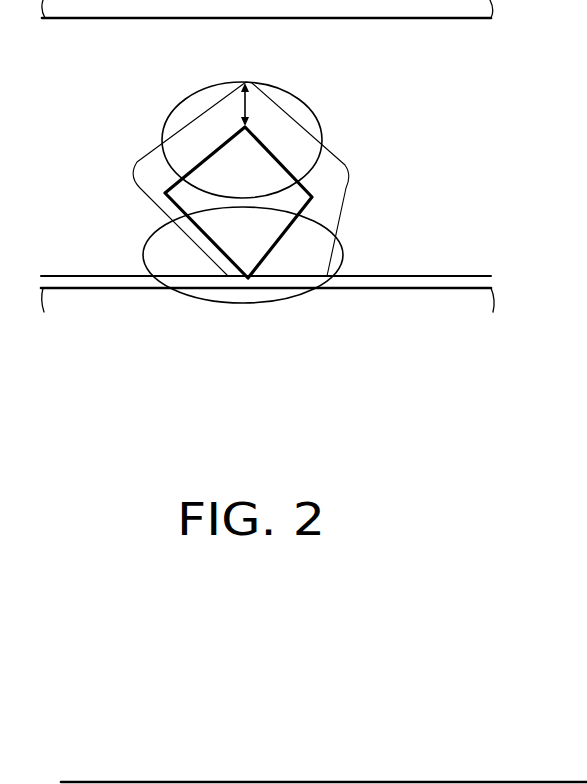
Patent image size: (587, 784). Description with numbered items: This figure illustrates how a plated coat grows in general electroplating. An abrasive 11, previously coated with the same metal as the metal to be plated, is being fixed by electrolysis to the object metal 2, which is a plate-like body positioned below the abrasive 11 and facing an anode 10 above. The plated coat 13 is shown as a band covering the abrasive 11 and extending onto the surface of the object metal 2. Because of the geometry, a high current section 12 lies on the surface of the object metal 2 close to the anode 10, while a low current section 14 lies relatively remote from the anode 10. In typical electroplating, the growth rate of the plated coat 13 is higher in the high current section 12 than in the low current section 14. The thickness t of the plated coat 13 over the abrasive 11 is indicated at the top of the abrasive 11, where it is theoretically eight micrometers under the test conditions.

The object metal 2 is at (101, 321).
The anode 10 is at (460, 18).
The abrasive 11 is at (190, 200).
The high current section 12 is at (313, 108).
The plated coat 13 is at (345, 165).
The low current section 14 is at (249, 303).
The thickness t is at (243, 103).